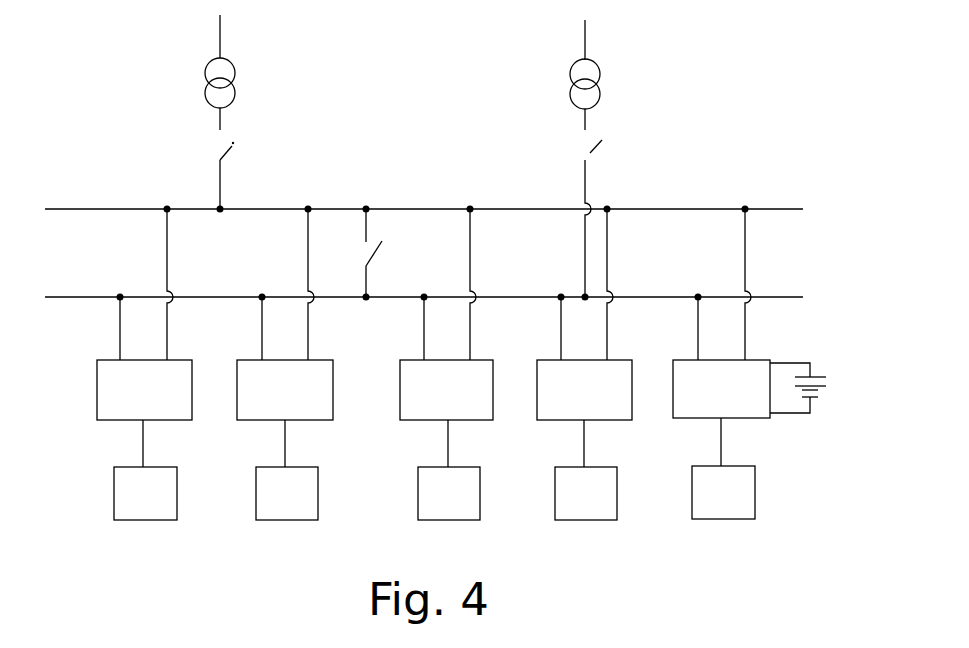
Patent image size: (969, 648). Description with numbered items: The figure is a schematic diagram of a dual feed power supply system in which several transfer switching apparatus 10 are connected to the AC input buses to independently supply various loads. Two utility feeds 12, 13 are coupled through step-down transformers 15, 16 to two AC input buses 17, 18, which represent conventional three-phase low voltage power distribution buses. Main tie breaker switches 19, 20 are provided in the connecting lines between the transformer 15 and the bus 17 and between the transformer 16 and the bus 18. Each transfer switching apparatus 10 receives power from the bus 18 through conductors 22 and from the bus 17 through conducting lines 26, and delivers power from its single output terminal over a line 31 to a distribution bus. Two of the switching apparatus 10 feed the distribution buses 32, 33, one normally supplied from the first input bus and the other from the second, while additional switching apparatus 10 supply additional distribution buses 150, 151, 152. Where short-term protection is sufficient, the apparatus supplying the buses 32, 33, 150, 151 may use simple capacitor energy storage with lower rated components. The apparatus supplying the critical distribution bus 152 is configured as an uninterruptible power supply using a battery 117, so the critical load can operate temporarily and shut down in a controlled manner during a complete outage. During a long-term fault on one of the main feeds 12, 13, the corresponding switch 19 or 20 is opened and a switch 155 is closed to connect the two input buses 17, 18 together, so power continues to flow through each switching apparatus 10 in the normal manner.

The transfer switching apparatus 10 is at (97, 389).
The utility feed 12 is at (219, 33).
The utility feed 13 is at (587, 35).
The step-down transformer 15 is at (206, 77).
The step-down transformer 16 is at (600, 73).
The AC input bus 17 is at (119, 208).
The AC input bus 18 is at (92, 296).
The main tie breaker switch 19 is at (242, 146).
The main tie breaker switch 20 is at (597, 153).
The conductors 22 is at (168, 328).
The conducting lines 26 is at (120, 330).
The line 31 is at (143, 437).
The distribution bus 32 is at (114, 498).
The distribution bus 33 is at (320, 491).
The battery 117 is at (822, 378).
The distribution bus 150 is at (418, 497).
The distribution bus 151 is at (555, 489).
The distribution bus 152 is at (692, 490).
The switch 155 is at (382, 250).